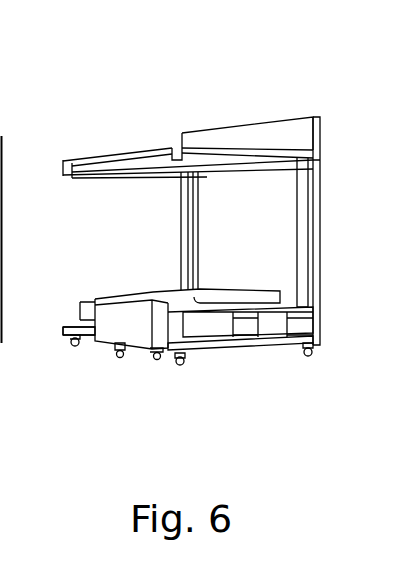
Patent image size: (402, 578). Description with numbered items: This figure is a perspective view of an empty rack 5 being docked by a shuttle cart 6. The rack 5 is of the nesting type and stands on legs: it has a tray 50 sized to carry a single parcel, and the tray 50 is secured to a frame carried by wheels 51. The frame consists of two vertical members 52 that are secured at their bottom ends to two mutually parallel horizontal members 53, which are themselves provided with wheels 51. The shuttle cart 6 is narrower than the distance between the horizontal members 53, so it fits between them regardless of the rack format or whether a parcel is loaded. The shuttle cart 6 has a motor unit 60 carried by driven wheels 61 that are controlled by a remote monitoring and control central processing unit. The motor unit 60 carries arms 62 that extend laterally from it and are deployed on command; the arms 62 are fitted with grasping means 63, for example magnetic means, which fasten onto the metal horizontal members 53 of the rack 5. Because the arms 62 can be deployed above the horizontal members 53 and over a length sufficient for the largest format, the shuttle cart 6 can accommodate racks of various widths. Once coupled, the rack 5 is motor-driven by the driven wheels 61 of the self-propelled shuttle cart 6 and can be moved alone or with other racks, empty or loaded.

The rack 5 is at (253, 110).
The tray 50 is at (145, 143).
The vertical members 52 is at (187, 240).
The shuttle cart 6 is at (104, 282).
The motor unit 60 is at (153, 292).
The arms 62 is at (268, 302).
The grasping means 63 is at (265, 340).
The horizontal members 53 is at (63, 327).
The wheels 51 is at (75, 346).
The driven wheels 61 is at (155, 360).